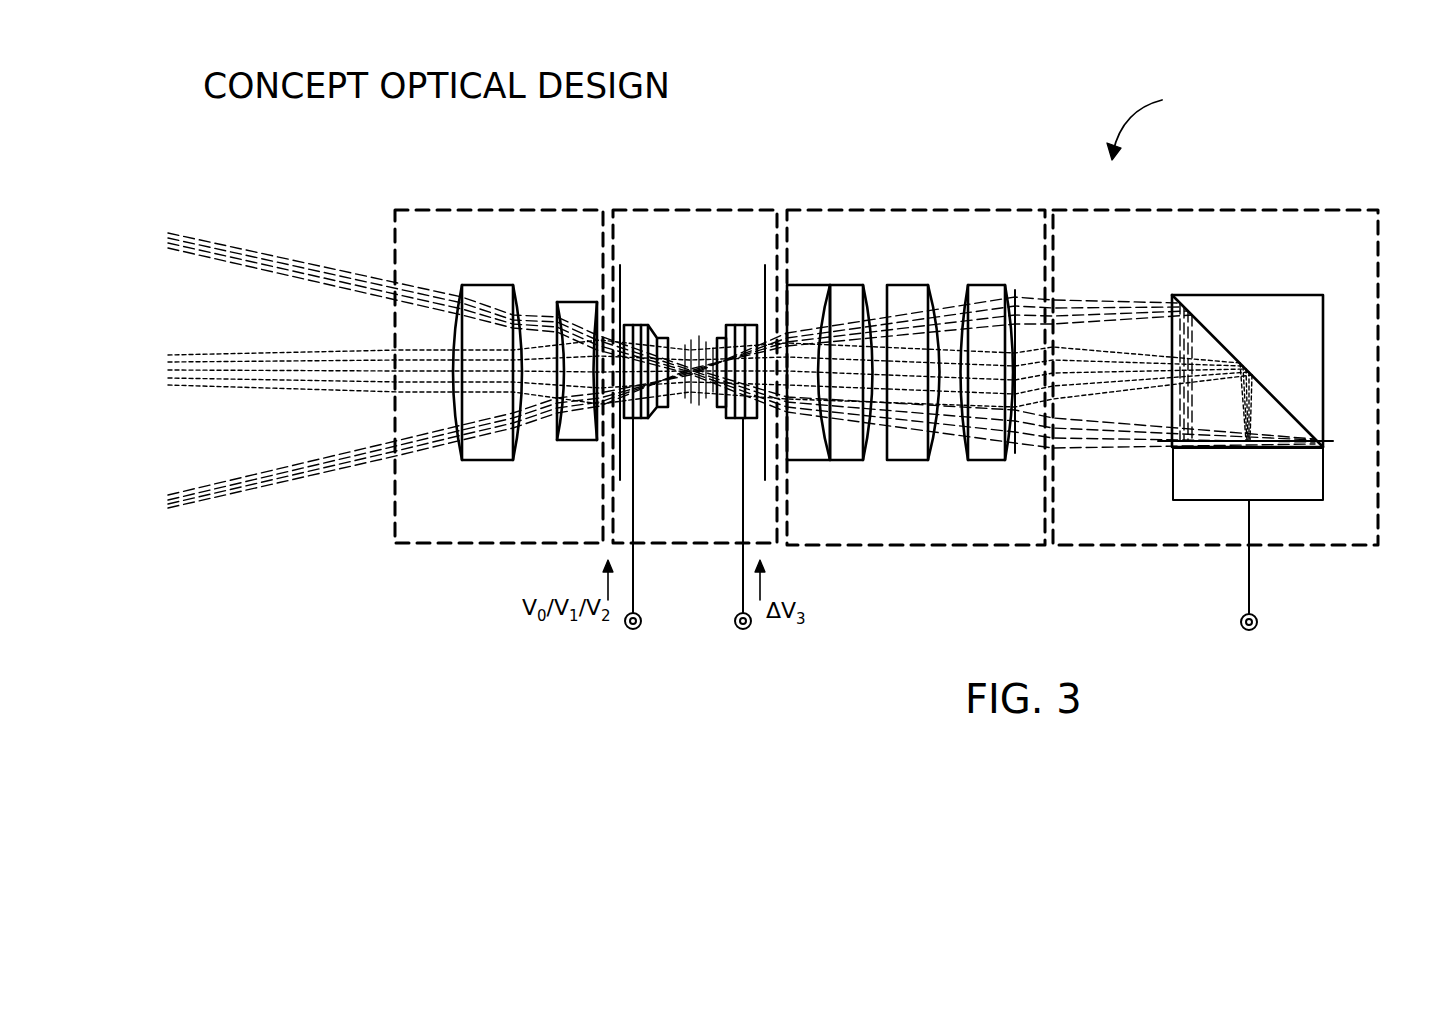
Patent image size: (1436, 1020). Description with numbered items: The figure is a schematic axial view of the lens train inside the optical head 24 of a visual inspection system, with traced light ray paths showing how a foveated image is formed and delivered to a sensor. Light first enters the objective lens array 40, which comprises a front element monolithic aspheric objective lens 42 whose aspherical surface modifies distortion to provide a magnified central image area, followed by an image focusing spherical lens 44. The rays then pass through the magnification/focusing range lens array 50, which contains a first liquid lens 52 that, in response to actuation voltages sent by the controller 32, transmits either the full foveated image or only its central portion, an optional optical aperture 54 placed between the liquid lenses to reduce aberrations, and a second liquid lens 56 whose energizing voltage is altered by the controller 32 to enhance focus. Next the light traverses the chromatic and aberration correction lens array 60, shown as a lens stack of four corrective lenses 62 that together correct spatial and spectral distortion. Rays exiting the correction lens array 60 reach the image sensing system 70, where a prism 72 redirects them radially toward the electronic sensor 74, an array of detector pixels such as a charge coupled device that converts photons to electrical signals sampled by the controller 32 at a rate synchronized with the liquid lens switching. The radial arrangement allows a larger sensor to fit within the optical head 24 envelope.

The optical head 24 is at (1151, 123).
The controller 32 is at (954, 636).
The objective lens array 40 is at (430, 210).
The front element monolithic aspheric objective lens 42 is at (480, 458).
The image focusing spherical lens 44 is at (577, 440).
The magnification/focusing range lens array 50 is at (702, 210).
The first liquid lens 52 is at (626, 325).
The optical aperture 54 is at (692, 408).
The second liquid lens 56 is at (738, 325).
The chromatic and aberration correction lens array 60 is at (963, 210).
The lens stack of corrective lenses 62 is at (1019, 478).
The image sensing system 70 is at (1272, 210).
The prism 72 is at (1290, 318).
The electronic sensor 74 is at (1313, 492).